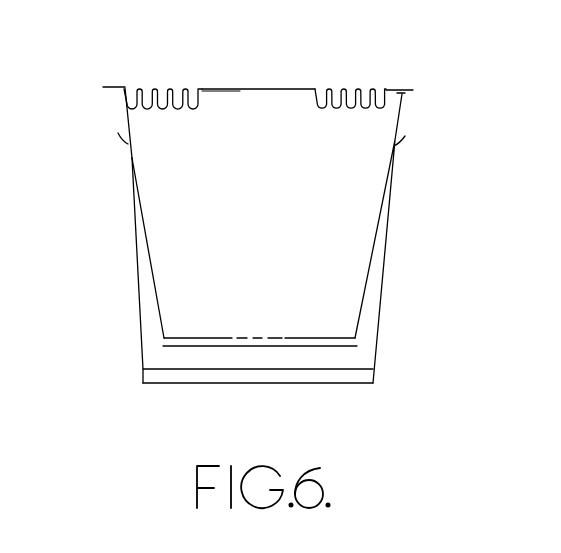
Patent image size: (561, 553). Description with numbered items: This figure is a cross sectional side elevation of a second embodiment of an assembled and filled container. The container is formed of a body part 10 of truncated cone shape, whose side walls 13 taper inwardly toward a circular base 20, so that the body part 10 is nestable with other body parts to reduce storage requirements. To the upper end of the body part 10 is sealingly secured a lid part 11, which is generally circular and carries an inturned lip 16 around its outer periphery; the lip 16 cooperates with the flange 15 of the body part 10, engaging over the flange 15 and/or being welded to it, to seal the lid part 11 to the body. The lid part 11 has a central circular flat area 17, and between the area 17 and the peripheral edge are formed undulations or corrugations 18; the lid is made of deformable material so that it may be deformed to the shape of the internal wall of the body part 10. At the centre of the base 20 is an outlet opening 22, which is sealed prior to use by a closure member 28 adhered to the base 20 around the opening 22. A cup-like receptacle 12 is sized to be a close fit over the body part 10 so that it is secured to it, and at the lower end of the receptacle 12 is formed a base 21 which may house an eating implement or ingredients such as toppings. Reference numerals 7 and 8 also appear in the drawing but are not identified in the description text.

The bottom 7 is at (261, 362).
The container 8 is at (263, 35).
The body part 10 is at (138, 266).
The lid part 11 is at (176, 72).
The receptacle 12 is at (120, 327).
The side walls 13 is at (370, 270).
The flange 15 is at (123, 93).
The inturned lip 16 is at (120, 86).
The central flat area 17 is at (242, 91).
The undulations or corrugations 18 is at (178, 128).
The circular base 20 is at (330, 344).
The base of receptacle 21 is at (170, 377).
The outlet opening 22 is at (249, 320).
The closure member 28 is at (166, 346).